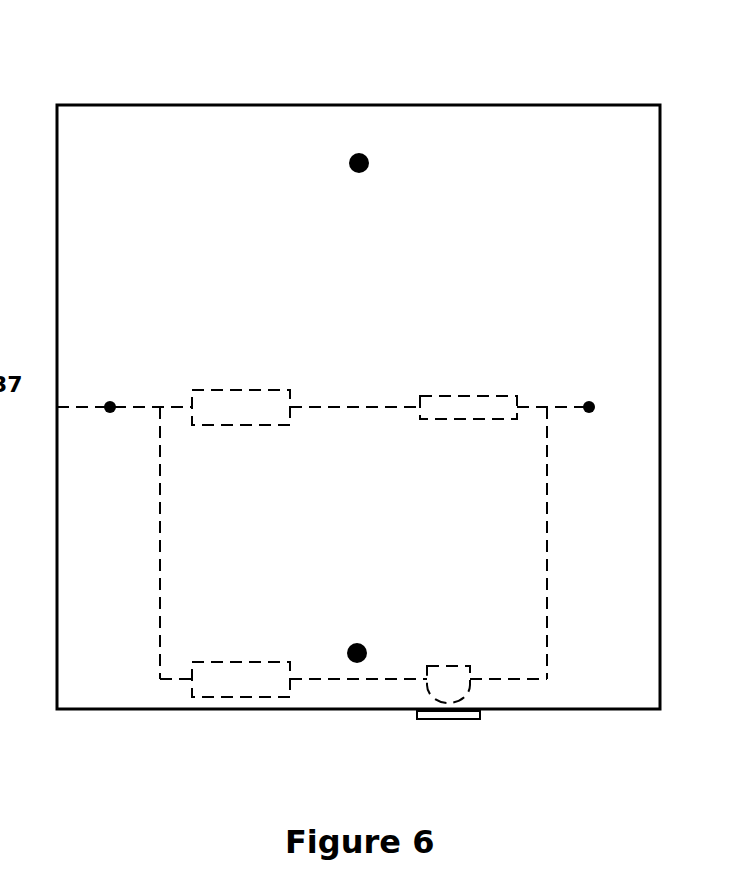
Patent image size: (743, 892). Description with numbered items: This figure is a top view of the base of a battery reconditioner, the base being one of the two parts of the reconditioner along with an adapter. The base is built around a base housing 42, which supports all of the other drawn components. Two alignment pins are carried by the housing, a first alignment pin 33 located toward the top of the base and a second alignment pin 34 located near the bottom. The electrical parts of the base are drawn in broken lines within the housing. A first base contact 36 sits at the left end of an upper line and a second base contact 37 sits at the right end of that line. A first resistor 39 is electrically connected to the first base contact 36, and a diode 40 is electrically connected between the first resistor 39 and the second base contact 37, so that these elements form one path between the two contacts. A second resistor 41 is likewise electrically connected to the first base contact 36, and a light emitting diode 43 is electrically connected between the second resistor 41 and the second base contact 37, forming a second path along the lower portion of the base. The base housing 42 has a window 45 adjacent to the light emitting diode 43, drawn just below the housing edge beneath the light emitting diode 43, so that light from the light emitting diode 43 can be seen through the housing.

The first alignment pin 33 is at (369, 160).
The second alignment pin 34 is at (357, 663).
The first base contact 36 is at (110, 407).
The second base contact 37 is at (595, 407).
The first resistor 39 is at (252, 390).
The diode 40 is at (470, 397).
The second resistor 41 is at (203, 697).
The base housing 42 is at (118, 709).
The light emitting diode 43 is at (470, 685).
The window 45 is at (440, 720).